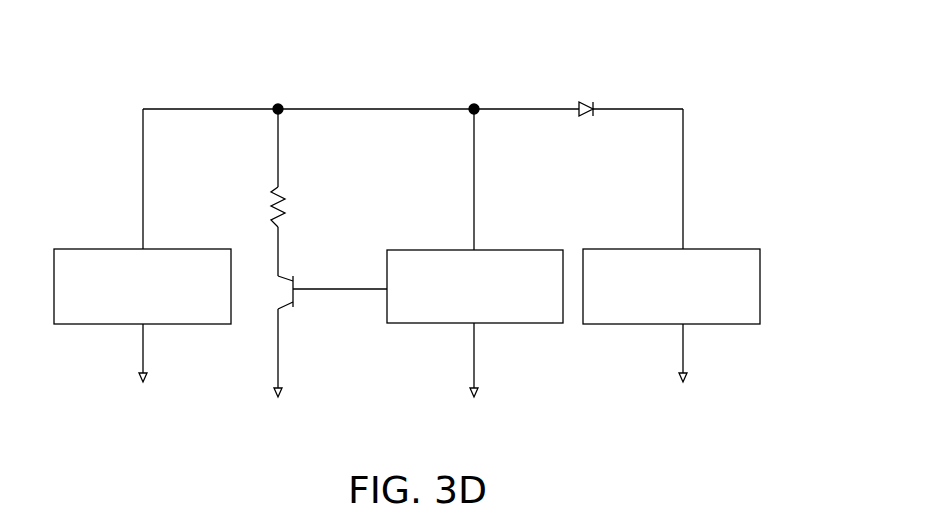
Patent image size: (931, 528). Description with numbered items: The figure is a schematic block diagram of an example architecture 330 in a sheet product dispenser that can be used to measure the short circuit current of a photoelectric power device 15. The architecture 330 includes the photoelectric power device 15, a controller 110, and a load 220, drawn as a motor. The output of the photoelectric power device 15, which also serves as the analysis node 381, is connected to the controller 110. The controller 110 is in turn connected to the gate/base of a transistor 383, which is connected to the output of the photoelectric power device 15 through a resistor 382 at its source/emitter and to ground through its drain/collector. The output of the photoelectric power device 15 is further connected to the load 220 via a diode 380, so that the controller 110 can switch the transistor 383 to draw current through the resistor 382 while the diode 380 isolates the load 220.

The architecture 330 is at (712, 78).
The photoelectric power device 15 is at (166, 249).
The controller 110 is at (486, 250).
The load 220 is at (725, 249).
The resistor 382 is at (289, 198).
The transistor 383 is at (290, 311).
The analysis node 381 is at (471, 103).
The diode 380 is at (582, 98).